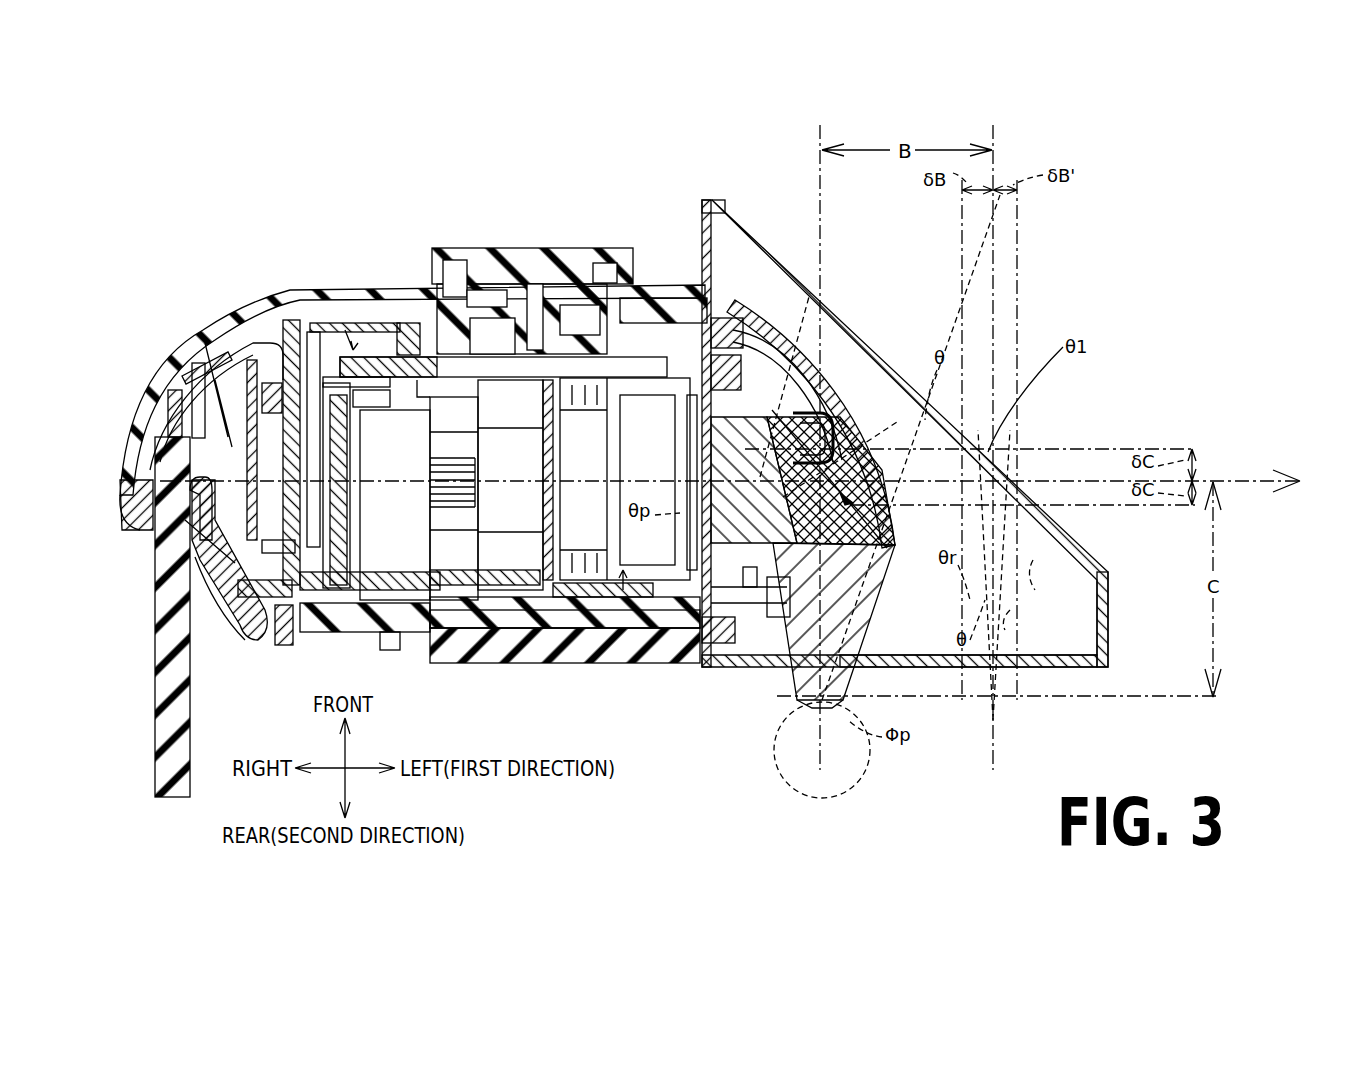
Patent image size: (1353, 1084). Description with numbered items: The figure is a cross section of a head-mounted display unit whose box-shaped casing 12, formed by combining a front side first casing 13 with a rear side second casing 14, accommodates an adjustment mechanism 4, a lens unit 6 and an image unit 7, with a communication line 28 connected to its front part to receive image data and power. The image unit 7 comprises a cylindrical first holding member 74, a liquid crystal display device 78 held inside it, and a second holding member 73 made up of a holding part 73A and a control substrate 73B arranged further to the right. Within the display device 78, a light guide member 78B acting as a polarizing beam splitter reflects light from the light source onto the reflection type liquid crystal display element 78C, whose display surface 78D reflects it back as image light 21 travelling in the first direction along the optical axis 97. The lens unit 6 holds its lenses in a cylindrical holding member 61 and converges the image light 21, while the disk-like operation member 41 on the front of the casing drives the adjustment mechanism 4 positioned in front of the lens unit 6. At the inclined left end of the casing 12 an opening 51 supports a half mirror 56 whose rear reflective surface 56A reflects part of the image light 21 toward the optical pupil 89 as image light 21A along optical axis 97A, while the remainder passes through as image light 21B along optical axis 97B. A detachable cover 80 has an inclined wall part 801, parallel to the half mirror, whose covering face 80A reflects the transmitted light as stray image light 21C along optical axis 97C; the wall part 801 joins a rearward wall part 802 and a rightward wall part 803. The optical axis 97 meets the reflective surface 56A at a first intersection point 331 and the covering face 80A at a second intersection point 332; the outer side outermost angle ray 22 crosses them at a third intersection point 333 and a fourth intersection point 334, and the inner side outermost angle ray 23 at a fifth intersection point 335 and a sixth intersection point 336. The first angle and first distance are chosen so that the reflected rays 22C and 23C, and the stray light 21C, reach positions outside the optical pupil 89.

The casing 12 is at (222, 318).
The first casing 13 is at (283, 302).
The communication line 28 is at (165, 648).
The control substrate 73B is at (177, 574).
The second holding member 73 is at (232, 602).
The holding part 73A is at (253, 622).
The image unit 7 is at (345, 480).
The liquid crystal display element 78C is at (385, 470).
The display surface 78D is at (398, 440).
The adjustment mechanism 4 is at (420, 430).
The operation member 41 is at (540, 257).
The first holding member 74 is at (490, 600).
The liquid crystal display device 78 is at (392, 600).
The light guide member 78B is at (440, 600).
The image light 21 is at (692, 452).
The lens unit 6 is at (640, 600).
The holding member 61 is at (590, 605).
The second casing 14 is at (378, 648).
The outer side outermost angle ray 22 is at (712, 245).
The wall part 801 is at (788, 270).
The wall part 802 is at (1105, 605).
The wall part 803 is at (1040, 667).
The cover 80 is at (870, 345).
The covering face 80A is at (877, 370).
The half mirror 56 is at (880, 420).
The reflective surface 56A is at (890, 437).
The image light 21B is at (895, 470).
The fourth intersection point 334 is at (973, 457).
The second intersection point 332 is at (1017, 455).
The opening 51 is at (790, 360).
The third intersection point 333 is at (850, 320).
The first intersection point 331 is at (855, 335).
The sixth intersection point 336 is at (1015, 510).
The optical axis 97 is at (705, 400).
The inner side outermost angle ray 23 is at (760, 655).
The optical axis 97A is at (775, 712).
The image light 21A is at (848, 580).
The ray 22C is at (878, 603).
The optical axis 97B is at (877, 565).
The fifth intersection point 335 is at (923, 612).
The image light 21C is at (1035, 592).
The optical axis 97C is at (1010, 610).
The ray 23C is at (1010, 632).
The optical pupil 89 is at (788, 784).